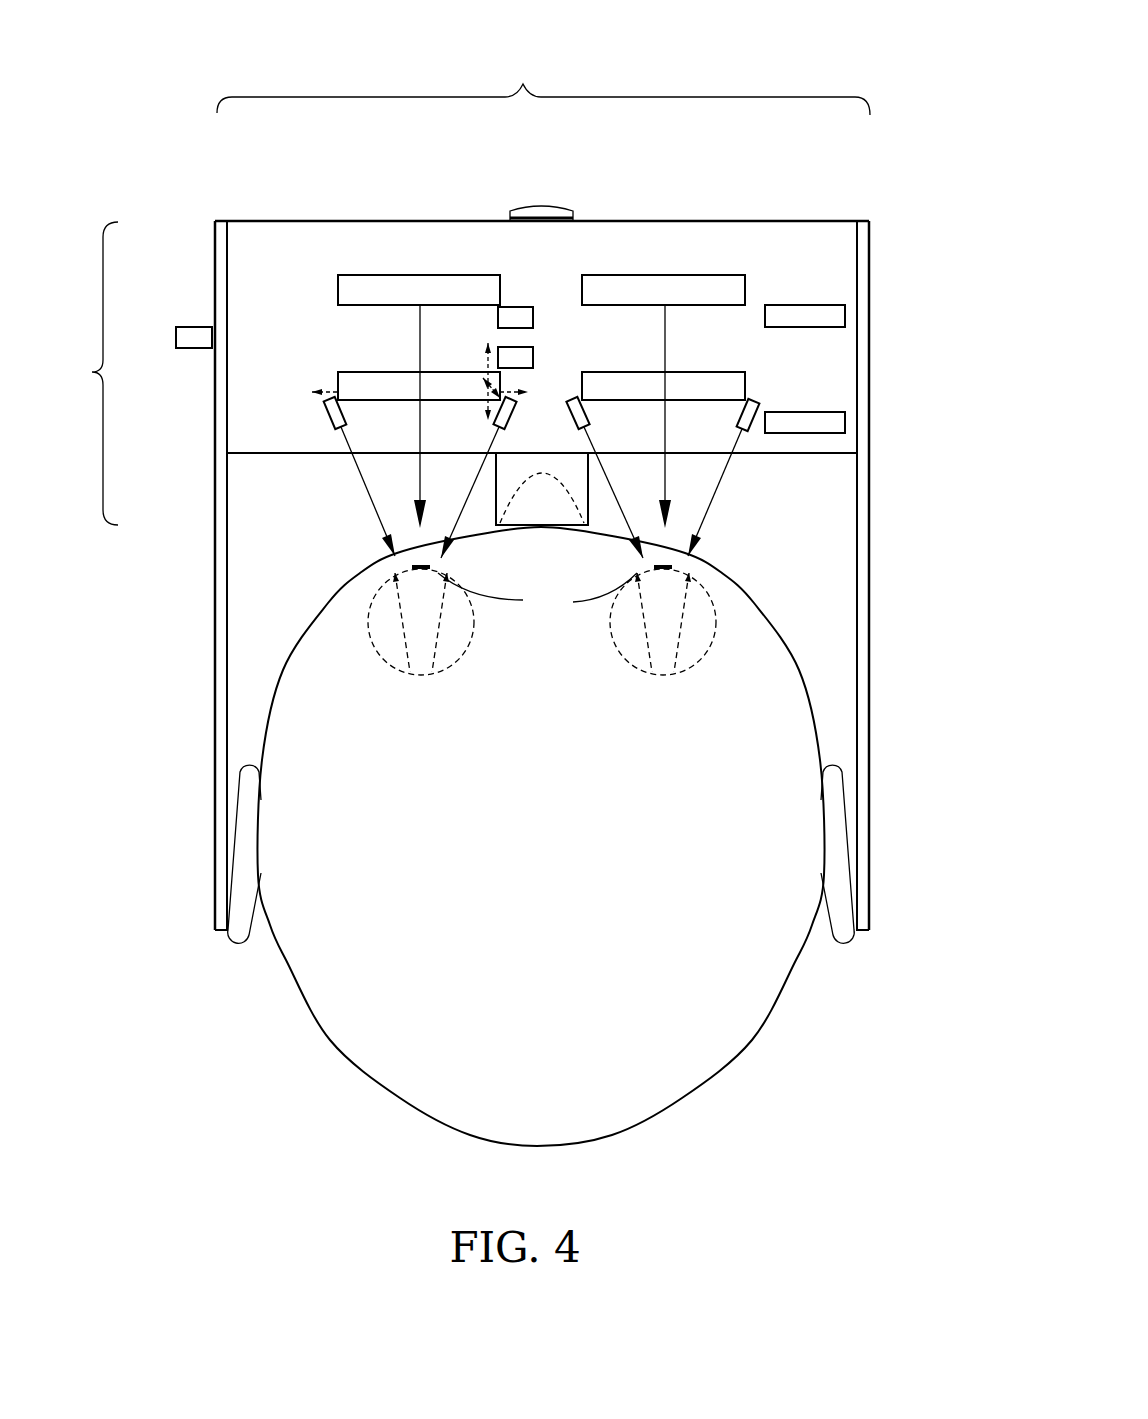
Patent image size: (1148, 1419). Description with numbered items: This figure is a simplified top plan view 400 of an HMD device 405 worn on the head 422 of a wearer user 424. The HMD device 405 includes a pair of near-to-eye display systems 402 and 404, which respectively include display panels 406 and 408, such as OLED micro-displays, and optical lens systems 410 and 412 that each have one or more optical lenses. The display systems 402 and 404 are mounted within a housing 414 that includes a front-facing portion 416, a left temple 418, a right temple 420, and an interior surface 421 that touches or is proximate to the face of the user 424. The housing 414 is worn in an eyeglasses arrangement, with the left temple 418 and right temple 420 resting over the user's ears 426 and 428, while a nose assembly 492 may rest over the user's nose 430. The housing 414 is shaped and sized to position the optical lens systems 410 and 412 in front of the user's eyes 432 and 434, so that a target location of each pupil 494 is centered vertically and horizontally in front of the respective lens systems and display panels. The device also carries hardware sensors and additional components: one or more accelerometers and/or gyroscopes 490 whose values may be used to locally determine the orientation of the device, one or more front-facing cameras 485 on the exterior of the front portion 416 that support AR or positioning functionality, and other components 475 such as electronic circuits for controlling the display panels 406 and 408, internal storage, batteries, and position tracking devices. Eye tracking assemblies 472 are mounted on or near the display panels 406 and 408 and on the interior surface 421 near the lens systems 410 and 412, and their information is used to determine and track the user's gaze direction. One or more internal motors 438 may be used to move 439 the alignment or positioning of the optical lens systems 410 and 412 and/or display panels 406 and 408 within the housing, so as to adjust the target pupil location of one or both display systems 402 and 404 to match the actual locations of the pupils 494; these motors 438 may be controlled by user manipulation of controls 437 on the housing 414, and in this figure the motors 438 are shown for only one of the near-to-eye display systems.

The top plan view 400 is at (838, 47).
The near-to-eye display system 402 is at (286, 258).
The near-to-eye display system 404 is at (797, 258).
The HMD device 405 is at (455, 291).
The display panel 406 is at (400, 275).
The display panel 408 is at (714, 275).
The optical lens system 410 is at (350, 372).
The optical lens system 412 is at (720, 372).
The housing 414 is at (222, 220).
The front-facing portion 416 is at (386, 220).
The left temple 418 is at (215, 720).
The right temple 420 is at (869, 690).
The interior surface 421 is at (270, 455).
The head 422 is at (643, 1125).
The wearer user 424 is at (815, 1073).
The ear 426 is at (232, 937).
The ear 428 is at (848, 937).
The nose 430 is at (573, 497).
The eye 432 is at (388, 655).
The eye 434 is at (705, 650).
The controls 437 is at (192, 327).
The internal motors 438 is at (533, 315).
The movement 439 is at (488, 350).
The eye tracking assemblies 472 is at (326, 407).
The other components 475 is at (845, 316).
The camera 485 is at (548, 205).
The accelerometers and/or gyroscopes 490 is at (845, 422).
The nose assembly 492 is at (497, 490).
The pupil 494 is at (537, 591).